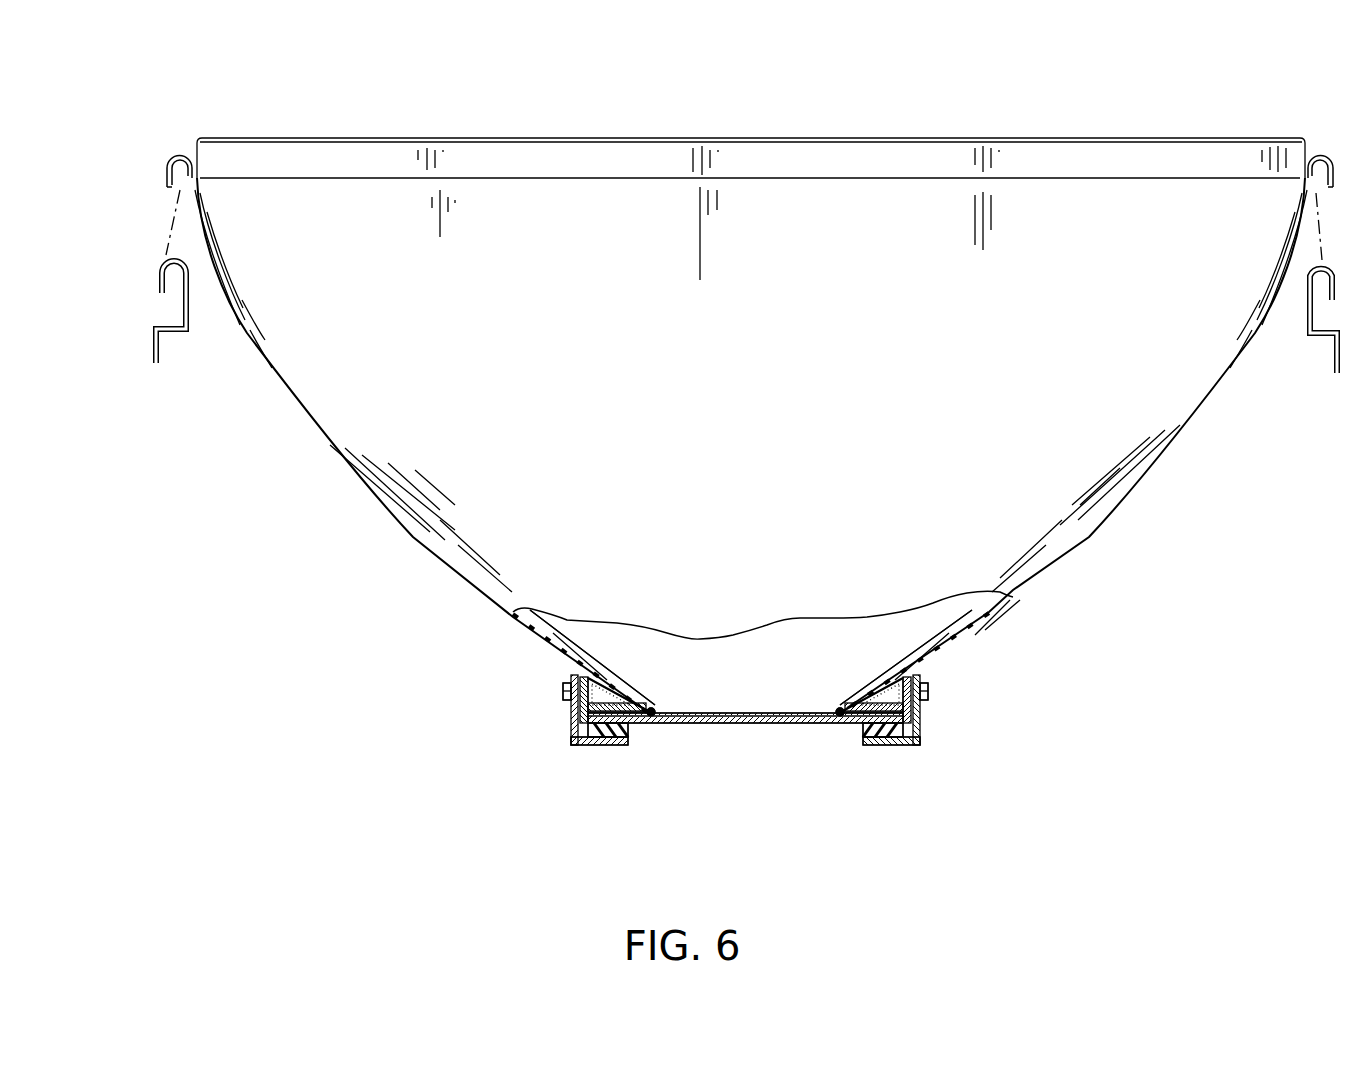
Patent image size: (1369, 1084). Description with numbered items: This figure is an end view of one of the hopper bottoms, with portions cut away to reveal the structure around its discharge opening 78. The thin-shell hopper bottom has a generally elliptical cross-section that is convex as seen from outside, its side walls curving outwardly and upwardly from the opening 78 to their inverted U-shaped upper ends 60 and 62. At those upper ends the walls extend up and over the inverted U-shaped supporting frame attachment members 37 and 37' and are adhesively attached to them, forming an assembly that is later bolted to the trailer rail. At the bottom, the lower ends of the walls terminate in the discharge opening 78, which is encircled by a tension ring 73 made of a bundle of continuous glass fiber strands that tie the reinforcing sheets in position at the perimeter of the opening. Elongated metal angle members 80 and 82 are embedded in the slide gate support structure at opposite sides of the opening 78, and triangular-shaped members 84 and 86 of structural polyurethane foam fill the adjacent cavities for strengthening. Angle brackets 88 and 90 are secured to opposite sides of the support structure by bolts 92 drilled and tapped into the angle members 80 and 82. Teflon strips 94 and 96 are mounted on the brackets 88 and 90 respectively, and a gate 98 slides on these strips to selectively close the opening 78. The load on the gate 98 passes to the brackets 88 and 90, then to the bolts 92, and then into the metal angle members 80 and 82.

The inverted U-shaped upper end 60 is at (1338, 152).
The inverted U-shaped upper end 62 is at (180, 153).
The supporting frame attachment member 37 is at (1327, 320).
The supporting frame attachment member 37' is at (143, 298).
The tension ring 73 is at (652, 708).
The discharge opening 78 is at (764, 712).
The metal angle member 80 is at (920, 707).
The metal angle member 82 is at (570, 703).
The triangular-shaped member 84 is at (920, 676).
The triangular-shaped member 86 is at (577, 670).
The angle bracket 88 is at (927, 723).
The angle bracket 90 is at (570, 732).
The bolt 92 is at (563, 688).
The Teflon strip 94 is at (888, 745).
The Teflon strip 96 is at (617, 745).
The gate 98 is at (727, 723).